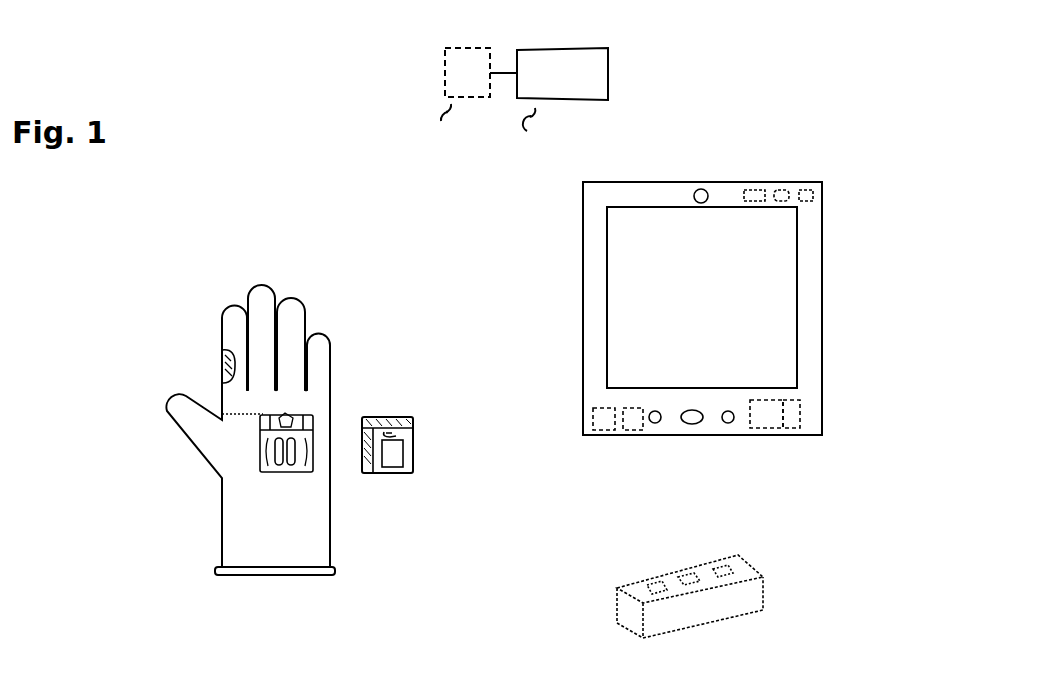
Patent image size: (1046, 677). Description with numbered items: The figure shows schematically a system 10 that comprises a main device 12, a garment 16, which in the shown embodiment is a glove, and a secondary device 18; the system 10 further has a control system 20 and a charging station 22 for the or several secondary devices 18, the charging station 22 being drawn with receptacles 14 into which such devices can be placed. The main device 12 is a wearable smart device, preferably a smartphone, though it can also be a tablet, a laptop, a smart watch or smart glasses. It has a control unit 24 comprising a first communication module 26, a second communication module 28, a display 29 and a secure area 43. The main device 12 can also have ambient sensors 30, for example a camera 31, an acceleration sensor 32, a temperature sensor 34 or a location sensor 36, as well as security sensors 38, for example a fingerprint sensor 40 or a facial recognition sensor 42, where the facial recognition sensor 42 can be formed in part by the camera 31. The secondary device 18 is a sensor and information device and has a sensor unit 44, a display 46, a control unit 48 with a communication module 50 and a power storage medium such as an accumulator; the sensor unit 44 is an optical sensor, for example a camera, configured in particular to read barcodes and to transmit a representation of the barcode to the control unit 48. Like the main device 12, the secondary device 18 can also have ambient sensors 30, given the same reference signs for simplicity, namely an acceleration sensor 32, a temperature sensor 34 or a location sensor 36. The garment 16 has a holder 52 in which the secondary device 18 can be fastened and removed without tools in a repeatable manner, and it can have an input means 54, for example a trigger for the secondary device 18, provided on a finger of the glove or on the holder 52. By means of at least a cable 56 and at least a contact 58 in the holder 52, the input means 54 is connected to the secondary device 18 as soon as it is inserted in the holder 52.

The system 10 is at (252, 135).
The main device 12 is at (445, 52).
The receptacle 14 is at (723, 565).
The garment 16 is at (235, 527).
The secondary device 18 is at (405, 393).
The control system 20 is at (557, 52).
The charging station 22 is at (719, 576).
The control unit 24 is at (770, 417).
The first communication module 26 is at (631, 427).
The second communication module 28 is at (604, 424).
The display 29 is at (776, 298).
The ambient sensors 30 is at (637, 286).
The camera 31 is at (569, 222).
The acceleration sensor 32 is at (808, 190).
The temperature sensor 34 is at (753, 190).
The location sensor 36 is at (781, 190).
The security sensors 38 is at (569, 306).
The fingerprint sensor 40 is at (690, 408).
The facial recognition sensor 42 is at (694, 198).
The secure area 43 is at (800, 408).
The sensor unit 44 is at (410, 425).
The display 46 is at (408, 455).
The control unit 48 is at (378, 473).
The communication module 50 is at (370, 418).
The holder 52 is at (292, 472).
The input means 54 is at (222, 370).
The cable 56 is at (237, 413).
The contact 58 is at (283, 425).